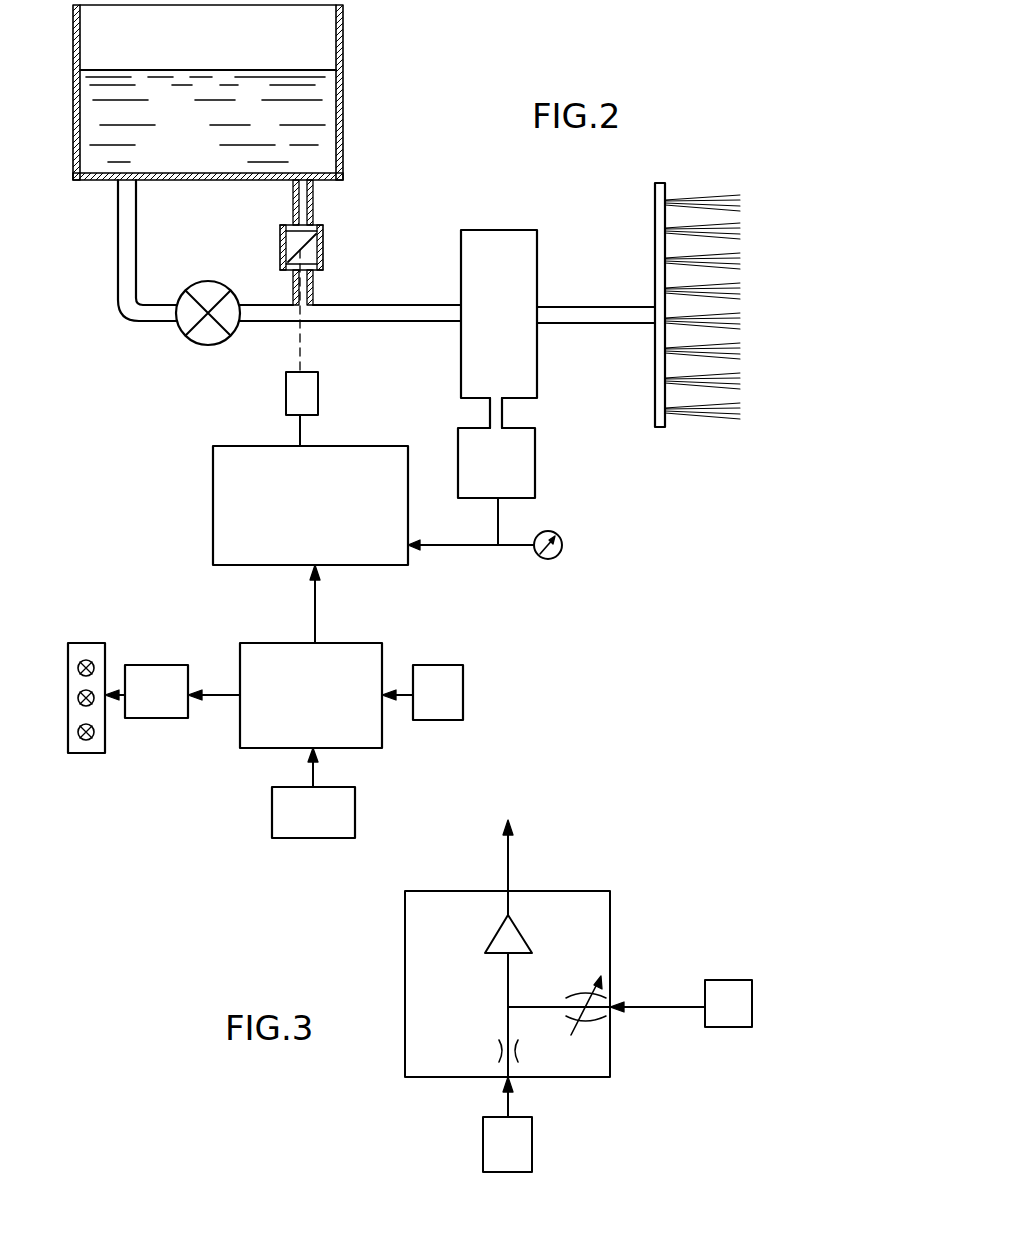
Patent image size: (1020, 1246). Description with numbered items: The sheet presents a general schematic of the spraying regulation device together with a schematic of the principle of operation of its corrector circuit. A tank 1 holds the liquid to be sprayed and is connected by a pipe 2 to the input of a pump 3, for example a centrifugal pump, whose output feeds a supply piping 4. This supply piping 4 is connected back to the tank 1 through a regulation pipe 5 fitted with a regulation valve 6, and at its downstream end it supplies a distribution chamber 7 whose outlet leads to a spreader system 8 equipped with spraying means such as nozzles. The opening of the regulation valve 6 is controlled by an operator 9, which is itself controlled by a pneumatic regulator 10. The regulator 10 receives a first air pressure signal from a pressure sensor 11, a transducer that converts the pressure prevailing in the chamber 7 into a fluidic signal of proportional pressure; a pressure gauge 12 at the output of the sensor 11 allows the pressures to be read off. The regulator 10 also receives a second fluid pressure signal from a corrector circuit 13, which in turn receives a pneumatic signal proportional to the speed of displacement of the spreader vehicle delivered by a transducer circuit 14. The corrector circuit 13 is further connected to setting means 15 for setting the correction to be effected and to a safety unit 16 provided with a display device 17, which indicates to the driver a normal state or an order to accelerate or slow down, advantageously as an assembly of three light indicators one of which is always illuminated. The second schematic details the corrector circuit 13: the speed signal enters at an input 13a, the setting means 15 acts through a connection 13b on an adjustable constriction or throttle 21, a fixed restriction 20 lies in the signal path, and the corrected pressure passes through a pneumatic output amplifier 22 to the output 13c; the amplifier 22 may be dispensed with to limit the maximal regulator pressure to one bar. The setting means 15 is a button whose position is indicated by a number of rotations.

In FIG. 2, the tank 1 is at (208, 92).
In FIG. 2, the pipe 2 is at (118, 237).
In FIG. 2, the pump 3 is at (222, 280).
In FIG. 2, the supply piping 4 is at (392, 312).
In FIG. 2, the regulation pipe 5 is at (300, 185).
In FIG. 2, the regulation valve 6 is at (320, 250).
In FIG. 2, the distribution chamber 7 is at (530, 230).
In FIG. 2, the spreader system 8 is at (655, 221).
In FIG. 2, the operator 9 is at (316, 378).
In FIG. 2, the pneumatic regulator 10 is at (196, 462).
In FIG. 2, the pressure sensor 11 is at (548, 461).
In FIG. 2, the pressure gauge 12 is at (560, 550).
In FIG. 2, the corrector circuit 13 is at (197, 790).
In FIG. 3, the corrector circuit 13 is at (543, 893).
In FIG. 2, the transducer circuit 14 is at (262, 853).
In FIG. 3, the transducer circuit 14 is at (545, 1150).
In FIG. 2, the setting means 15 is at (433, 685).
In FIG. 3, the setting means 15 is at (725, 991).
In FIG. 2, the safety unit 16 is at (131, 638).
In FIG. 2, the display device 17 is at (82, 680).
In FIG. 3, the corrector circuit input 13a is at (505, 1082).
In FIG. 3, the corrector circuit setting input 13b is at (610, 1010).
In FIG. 3, the corrector circuit output 13c is at (508, 891).
In FIG. 3, the fixed restrictor 20 is at (502, 1066).
In FIG. 3, the adjustable constriction or throttle 21 is at (608, 1002).
In FIG. 3, the pneumatic output amplifier 22 is at (515, 946).